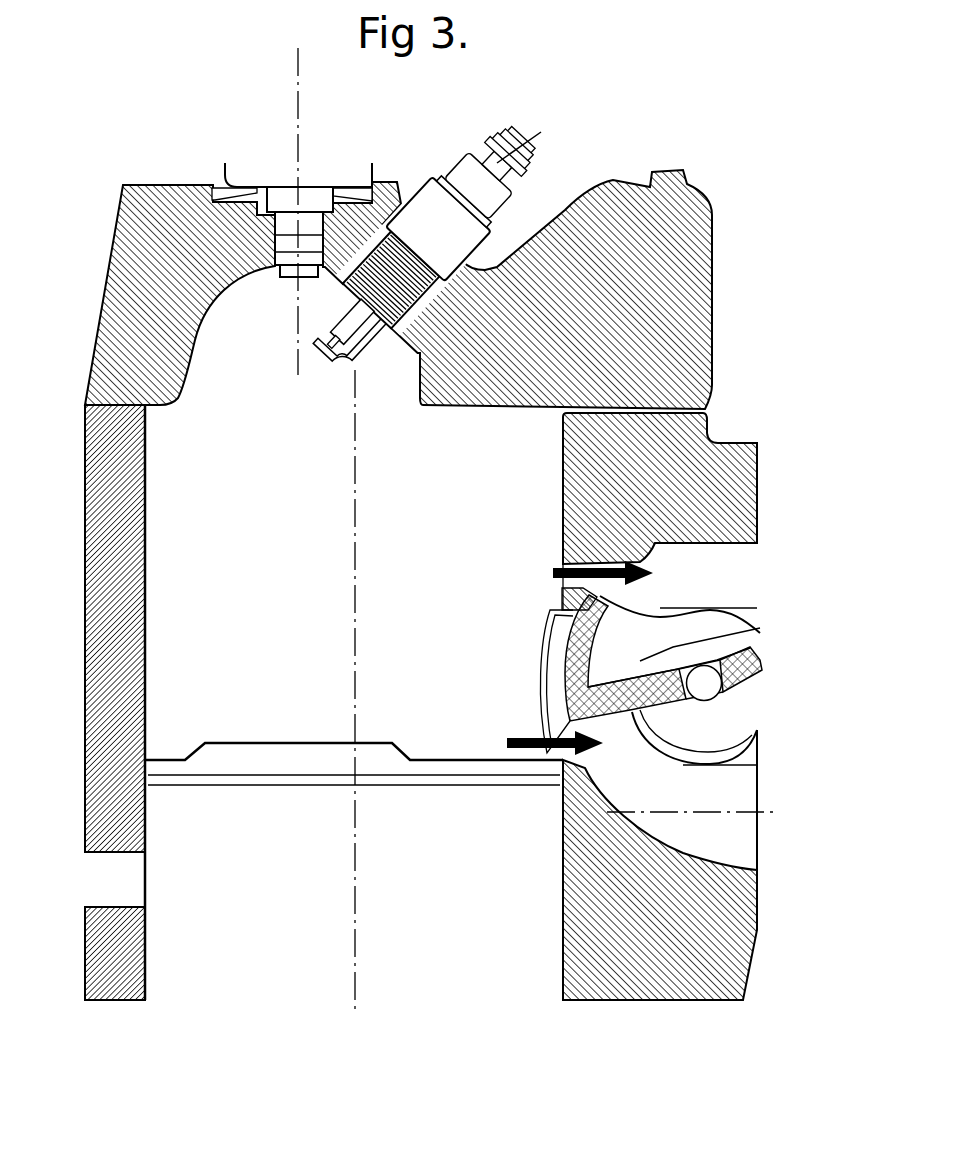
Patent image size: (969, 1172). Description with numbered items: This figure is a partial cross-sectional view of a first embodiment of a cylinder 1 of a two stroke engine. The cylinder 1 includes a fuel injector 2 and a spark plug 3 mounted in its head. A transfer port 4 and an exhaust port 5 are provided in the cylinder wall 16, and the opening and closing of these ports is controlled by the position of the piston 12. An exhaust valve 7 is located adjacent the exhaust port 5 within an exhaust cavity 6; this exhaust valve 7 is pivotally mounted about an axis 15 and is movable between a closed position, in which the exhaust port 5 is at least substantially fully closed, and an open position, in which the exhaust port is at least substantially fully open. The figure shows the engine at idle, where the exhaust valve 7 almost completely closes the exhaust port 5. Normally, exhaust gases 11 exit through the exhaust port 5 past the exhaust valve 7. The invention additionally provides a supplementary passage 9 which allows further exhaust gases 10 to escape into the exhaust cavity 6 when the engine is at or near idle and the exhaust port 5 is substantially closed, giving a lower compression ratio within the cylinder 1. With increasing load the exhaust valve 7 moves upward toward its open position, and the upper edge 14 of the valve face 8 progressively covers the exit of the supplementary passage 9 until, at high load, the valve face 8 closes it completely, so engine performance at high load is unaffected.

The cylinder 1 is at (248, 614).
The fuel injector 2 is at (297, 280).
The spark plug 3 is at (364, 348).
The transfer port 4 is at (114, 879).
The exhaust port 5 is at (509, 691).
The exhaust cavity 6 is at (712, 795).
The exhaust valve 7 is at (680, 648).
The valve face 8 is at (566, 648).
The supplementary passage 9 is at (556, 566).
The further exhaust gases 10 is at (551, 573).
The exhaust gases 11 is at (506, 738).
The piston 12 is at (190, 745).
The upper edge 14 is at (598, 595).
The axis 15 is at (708, 692).
The cylinder wall 16 is at (147, 530).